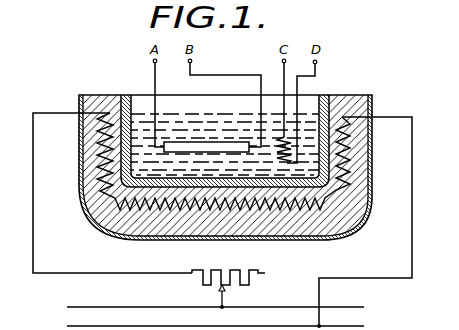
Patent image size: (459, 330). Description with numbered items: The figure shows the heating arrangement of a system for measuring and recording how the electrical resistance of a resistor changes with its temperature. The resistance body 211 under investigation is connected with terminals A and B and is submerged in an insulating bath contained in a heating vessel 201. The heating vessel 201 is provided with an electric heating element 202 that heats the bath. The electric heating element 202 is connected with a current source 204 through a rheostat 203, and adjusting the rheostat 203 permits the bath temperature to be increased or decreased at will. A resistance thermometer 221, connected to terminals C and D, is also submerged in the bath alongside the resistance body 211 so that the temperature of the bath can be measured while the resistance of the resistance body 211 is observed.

The heating vessel 201 is at (127, 95).
The electric heating element 202 is at (118, 230).
The rheostat 203 is at (216, 268).
The current source 204 is at (356, 320).
The resistance body 211 is at (197, 142).
The resistance thermometer 221 is at (282, 137).